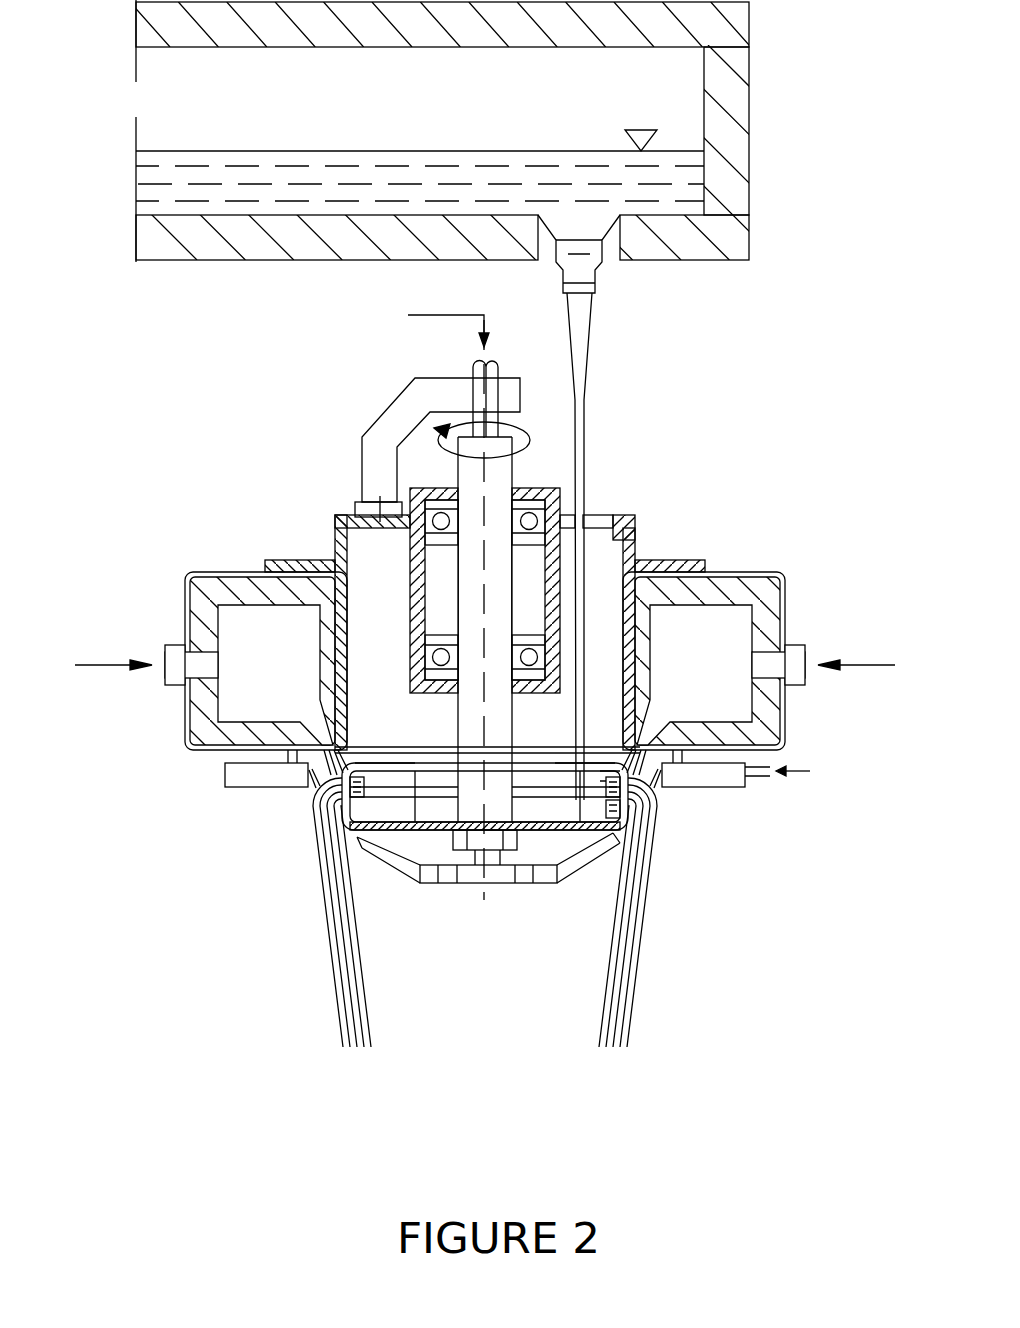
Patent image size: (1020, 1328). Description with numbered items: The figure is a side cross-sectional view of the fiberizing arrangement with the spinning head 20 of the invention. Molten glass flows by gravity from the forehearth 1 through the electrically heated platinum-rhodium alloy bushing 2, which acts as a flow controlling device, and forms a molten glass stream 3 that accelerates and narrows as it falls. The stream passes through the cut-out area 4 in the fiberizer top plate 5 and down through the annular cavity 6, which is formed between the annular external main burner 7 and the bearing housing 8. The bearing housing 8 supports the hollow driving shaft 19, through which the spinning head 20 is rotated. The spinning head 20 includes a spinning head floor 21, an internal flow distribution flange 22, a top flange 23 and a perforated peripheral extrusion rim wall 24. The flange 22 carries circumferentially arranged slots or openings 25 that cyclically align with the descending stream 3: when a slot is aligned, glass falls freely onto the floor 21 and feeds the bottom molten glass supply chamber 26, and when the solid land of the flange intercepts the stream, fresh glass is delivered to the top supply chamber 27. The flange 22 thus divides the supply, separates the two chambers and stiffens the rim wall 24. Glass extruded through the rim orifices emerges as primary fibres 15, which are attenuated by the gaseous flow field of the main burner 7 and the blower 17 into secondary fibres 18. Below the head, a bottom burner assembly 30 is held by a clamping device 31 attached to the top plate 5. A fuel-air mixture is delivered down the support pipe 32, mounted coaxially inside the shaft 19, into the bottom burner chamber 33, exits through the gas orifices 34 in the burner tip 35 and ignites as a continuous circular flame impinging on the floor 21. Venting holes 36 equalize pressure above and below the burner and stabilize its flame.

The forehearth 1 is at (737, 122).
The bushing 2 is at (595, 273).
The molten glass stream 3 is at (578, 333).
The cut-out area 4 is at (597, 520).
The fiberizer top plate 5 is at (632, 541).
The annular cavity 6 is at (603, 642).
The annular external (main) burner 7 is at (248, 695).
The bearing housing 8 is at (415, 558).
The primary fibres 15 is at (625, 778).
The blower 17 is at (247, 772).
The secondary fibres 18 is at (613, 835).
The driving shaft 19 is at (468, 477).
The spinning head 20 is at (557, 880).
The spinning head floor 21 is at (360, 830).
The internal flow distribution flange 22 is at (352, 804).
The top flange 23 is at (369, 762).
The peripheral extrusion rim wall 24 is at (630, 800).
The slots or openings 25 is at (585, 762).
The bottom molten glass supply chamber 26 is at (625, 818).
The top supply chamber 27 is at (660, 800).
The bottom burner assembly 30 is at (430, 883).
The clamping device 31 is at (382, 423).
The support pipe 32 is at (482, 368).
The bottom burner chamber 33 is at (375, 938).
The gas orifices 34 is at (373, 846).
The burner tip 35 is at (615, 840).
The venting holes 36 is at (447, 878).